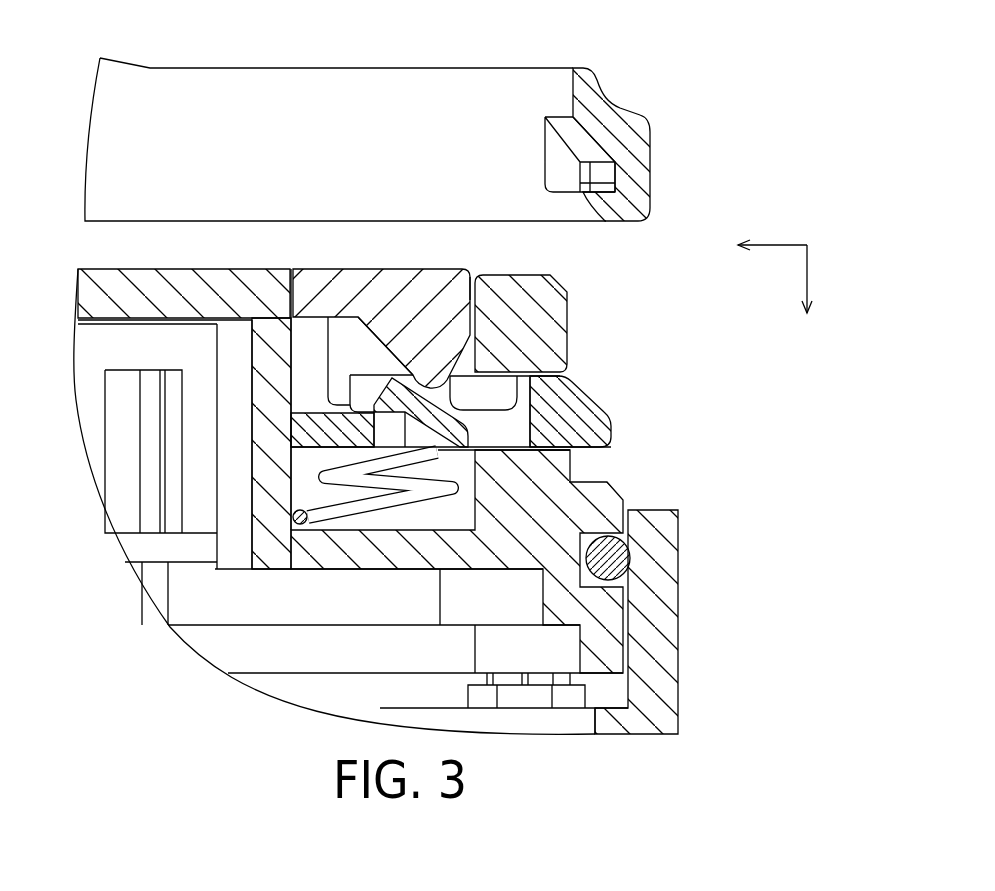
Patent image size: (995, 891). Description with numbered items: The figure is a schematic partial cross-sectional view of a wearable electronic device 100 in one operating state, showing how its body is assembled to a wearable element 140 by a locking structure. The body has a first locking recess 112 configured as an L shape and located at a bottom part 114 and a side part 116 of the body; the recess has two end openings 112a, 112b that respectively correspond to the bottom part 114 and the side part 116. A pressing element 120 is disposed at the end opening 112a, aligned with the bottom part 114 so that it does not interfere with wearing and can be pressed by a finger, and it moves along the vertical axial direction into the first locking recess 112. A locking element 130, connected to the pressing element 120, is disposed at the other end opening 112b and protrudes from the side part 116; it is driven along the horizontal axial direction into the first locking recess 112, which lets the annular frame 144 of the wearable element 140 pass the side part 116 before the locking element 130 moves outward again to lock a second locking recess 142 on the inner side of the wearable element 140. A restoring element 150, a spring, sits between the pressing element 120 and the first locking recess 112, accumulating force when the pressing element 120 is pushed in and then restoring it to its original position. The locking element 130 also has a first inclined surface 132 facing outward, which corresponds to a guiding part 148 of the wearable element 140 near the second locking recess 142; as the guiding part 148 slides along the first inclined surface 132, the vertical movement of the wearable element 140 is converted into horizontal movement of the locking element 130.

The wearable electronic device 100 is at (753, 756).
The first locking recess 112 is at (372, 357).
The end opening 112a is at (472, 300).
The end opening 112b is at (553, 448).
The bottom part 114 is at (167, 268).
The side part 116 is at (570, 353).
The pressing element 120 is at (380, 282).
The locking element 130 is at (590, 432).
The first inclined surface 132 is at (600, 408).
The wearable element 140 is at (647, 93).
The second locking recess 142 is at (593, 149).
The annular frame 144 is at (445, 102).
The guiding part 148 is at (637, 152).
The restoring element 150 is at (357, 512).